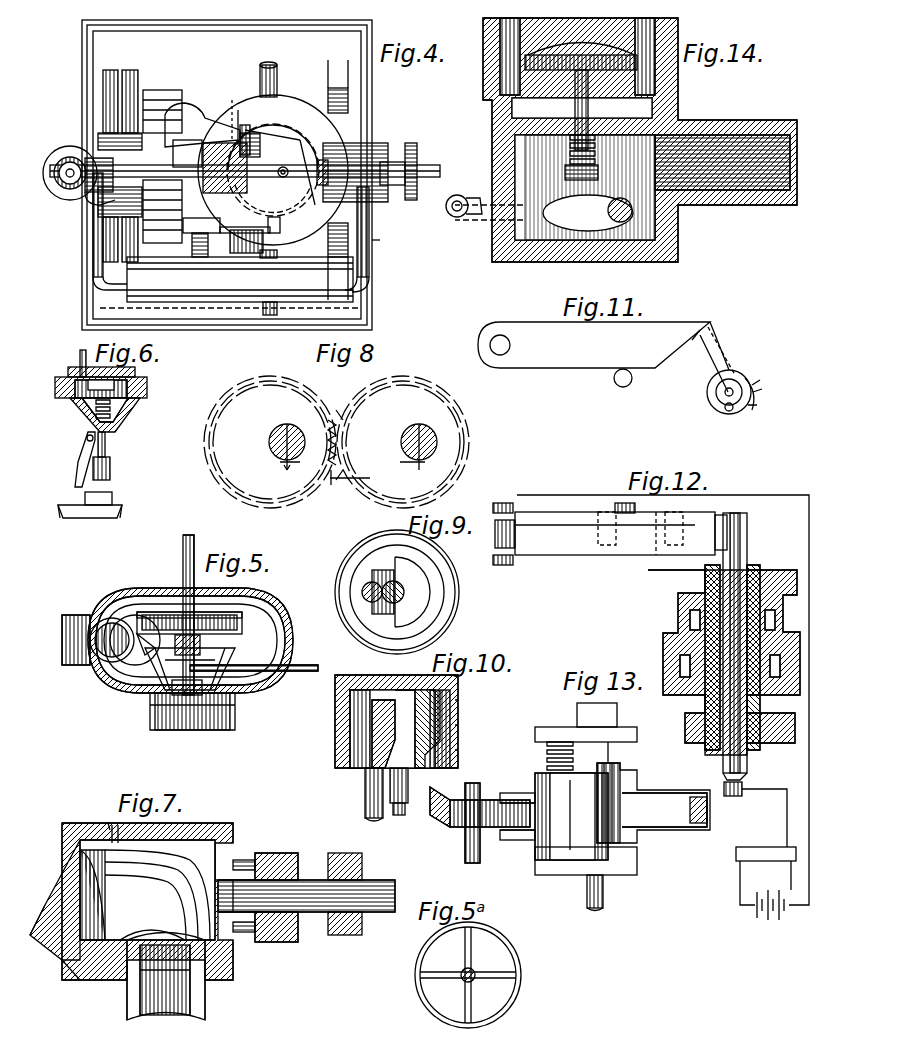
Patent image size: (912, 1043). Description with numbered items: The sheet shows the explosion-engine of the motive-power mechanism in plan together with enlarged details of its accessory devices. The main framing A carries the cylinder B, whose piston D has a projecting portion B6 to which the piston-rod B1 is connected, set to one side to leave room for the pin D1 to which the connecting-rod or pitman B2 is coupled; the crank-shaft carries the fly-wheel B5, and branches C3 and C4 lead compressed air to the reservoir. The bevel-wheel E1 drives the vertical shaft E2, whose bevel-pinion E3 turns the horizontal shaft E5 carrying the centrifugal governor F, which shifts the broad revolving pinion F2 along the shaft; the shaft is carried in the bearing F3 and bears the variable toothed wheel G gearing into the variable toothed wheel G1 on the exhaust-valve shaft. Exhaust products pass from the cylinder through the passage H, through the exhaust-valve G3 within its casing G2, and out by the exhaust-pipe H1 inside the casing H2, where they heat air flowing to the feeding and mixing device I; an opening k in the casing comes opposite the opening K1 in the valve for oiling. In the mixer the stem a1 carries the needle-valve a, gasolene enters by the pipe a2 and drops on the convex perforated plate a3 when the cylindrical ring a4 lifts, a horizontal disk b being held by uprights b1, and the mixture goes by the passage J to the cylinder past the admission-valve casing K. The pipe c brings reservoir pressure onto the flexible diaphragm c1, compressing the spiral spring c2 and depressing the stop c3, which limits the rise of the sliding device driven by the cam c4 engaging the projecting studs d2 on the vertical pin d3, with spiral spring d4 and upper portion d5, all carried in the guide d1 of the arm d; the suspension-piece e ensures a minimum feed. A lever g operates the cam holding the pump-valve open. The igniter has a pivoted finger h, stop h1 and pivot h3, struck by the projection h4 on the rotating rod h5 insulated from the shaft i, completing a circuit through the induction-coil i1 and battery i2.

In FIG. 4, the main framing A is at (205, 310).
In FIG. 4, the cylinder B is at (290, 100).
In FIG. 4, the fly-wheel B5 is at (162, 100).
In FIG. 9, the projecting portion B6 is at (415, 578).
In FIG. 10, the projecting portion B6 is at (440, 740).
In FIG. 9, the connecting-rod or pitman B2 is at (365, 590).
In FIG. 10, the connecting-rod or pitman B2 is at (368, 793).
In FIG. 9, the piston-rod B1 is at (400, 595).
In FIG. 10, the piston-rod B1 is at (403, 812).
In FIG. 4, the branch pipe C3 is at (270, 315).
In FIG. 4, the branch pipe C4 is at (268, 68).
In FIG. 9, the piston D is at (440, 620).
In FIG. 10, the piston D is at (342, 712).
In FIG. 10, the pin D1 is at (378, 730).
In FIG. 4, the bevel-wheel E1 is at (80, 192).
In FIG. 13, the vertical shaft E2 is at (465, 840).
In FIG. 4, the bevel-pinion E3 is at (55, 167).
In FIG. 4, the horizontal shaft E5 is at (355, 172).
In FIG. 4, the centrifugal governor F is at (300, 178).
In FIG. 4, the broad revolving pinion F2 is at (280, 186).
In FIG. 4, the bearing F3 is at (390, 195).
In FIG. 4, the variable toothed wheel G is at (418, 162).
In FIG. 8, the variable toothed wheel G is at (460, 440).
In FIG. 8, the variable toothed wheel G1 is at (210, 440).
In FIG. 7, the variable toothed wheel G1 is at (350, 860).
In FIG. 7, the casing G2 is at (65, 838).
In FIG. 7, the exhaust-valve G3 is at (145, 895).
In FIG. 7, the passage H is at (50, 945).
In FIG. 4, the exhaust-pipe H1 is at (373, 243).
In FIG. 7, the exhaust-pipe H1 is at (205, 1012).
In FIG. 4, the casing H2 is at (248, 244).
In FIG. 5, the feeding and mixing device I is at (70, 666).
In FIG. 5, the passage J is at (225, 728).
In FIG. 4, the casing K is at (212, 148).
In FIG. 7, the opening K1 is at (95, 975).
In FIG. 7, the opening k is at (112, 826).
In FIG. 5, the needle-valve a is at (168, 670).
In FIG. 5, the stem a1 is at (194, 542).
In FIG. 5A, the stem a1 is at (476, 968).
In FIG. 13, the stem a1 is at (605, 895).
In FIG. 5, the pipe a2 is at (318, 667).
In FIG. 5, the convex perforated plate a3 is at (185, 695).
In FIG. 5, the cylindrical ring a4 is at (120, 615).
In FIG. 5A, the cylindrical ring a4 is at (420, 960).
In FIG. 5, the horizontal disk b is at (115, 672).
In FIG. 5, the uprights b1 is at (170, 645).
In FIG. 6, the pipe c is at (80, 352).
In FIG. 6, the flexible diaphragm c1 is at (140, 377).
In FIG. 6, the spiral spring c2 is at (125, 408).
In FIG. 6, the stop c3 is at (112, 468).
In FIG. 13, the cam c4 is at (480, 801).
In FIG. 12, the arm d is at (670, 830).
In FIG. 13, the guide d1 is at (625, 776).
In FIG. 13, the projecting studs d2 is at (510, 796).
In FIG. 13, the vertical pin d3 is at (550, 748).
In FIG. 13, the spiral spring d4 is at (575, 760).
In FIG. 6, the upper portion of sliding device d5 is at (110, 496).
In FIG. 13, the upper portion of sliding device d5 is at (600, 712).
In FIG. 6, the suspension-piece e is at (78, 468).
In FIG. 14, the lever g is at (468, 218).
In FIG. 11, the pivoted finger h is at (594, 345).
In FIG. 12, the pivoted finger h is at (605, 476).
In FIG. 11, the stop h1 is at (676, 375).
In FIG. 11, the pivot h3 is at (498, 345).
In FIG. 12, the pivot h3 is at (503, 503).
In FIG. 11, the projection h4 is at (725, 355).
In FIG. 12, the projection h4 is at (730, 530).
In FIG. 4, the rotating rod h5 is at (252, 135).
In FIG. 12, the rotating rod h5 is at (742, 555).
In FIG. 4, the shaft i is at (235, 111).
In FIG. 12, the shaft i is at (760, 583).
In FIG. 12, the induction-coil i1 is at (757, 855).
In FIG. 12, the battery i2 is at (778, 894).